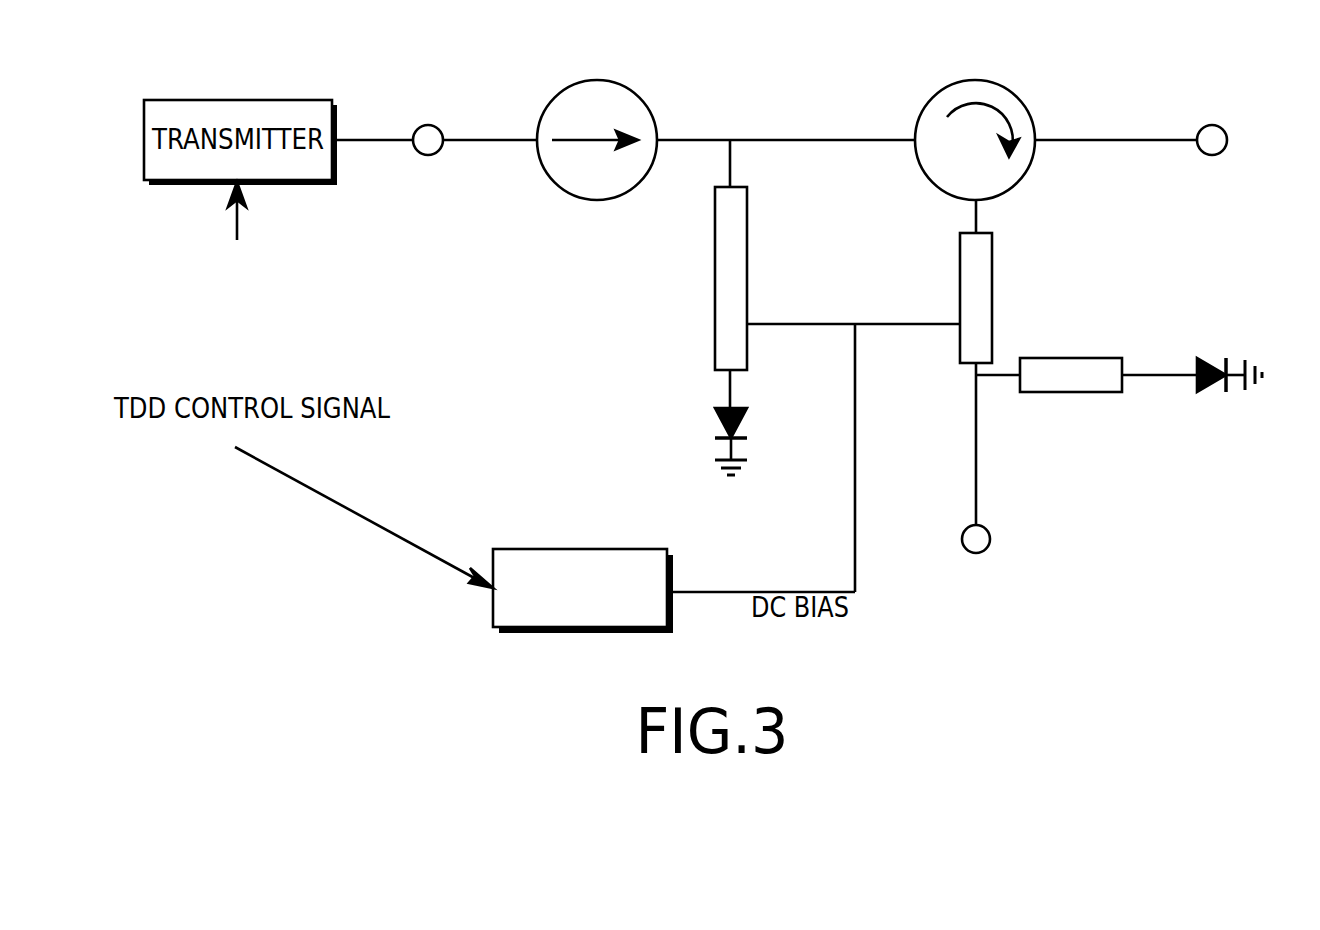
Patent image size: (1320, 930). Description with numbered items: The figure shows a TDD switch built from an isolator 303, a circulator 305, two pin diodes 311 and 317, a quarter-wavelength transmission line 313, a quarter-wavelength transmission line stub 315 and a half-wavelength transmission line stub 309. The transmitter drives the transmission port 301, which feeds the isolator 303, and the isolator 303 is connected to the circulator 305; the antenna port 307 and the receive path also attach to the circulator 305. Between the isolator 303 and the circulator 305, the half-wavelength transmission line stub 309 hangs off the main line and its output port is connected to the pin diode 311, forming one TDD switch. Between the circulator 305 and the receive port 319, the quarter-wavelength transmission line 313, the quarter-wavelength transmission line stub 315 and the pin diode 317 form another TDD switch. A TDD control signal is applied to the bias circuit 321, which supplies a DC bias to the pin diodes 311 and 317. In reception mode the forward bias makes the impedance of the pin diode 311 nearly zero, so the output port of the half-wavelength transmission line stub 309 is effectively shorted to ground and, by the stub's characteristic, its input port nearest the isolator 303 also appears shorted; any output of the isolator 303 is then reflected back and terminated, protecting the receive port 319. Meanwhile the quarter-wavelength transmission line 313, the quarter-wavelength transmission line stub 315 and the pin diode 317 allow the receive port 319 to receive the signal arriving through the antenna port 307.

The transmission port 301 is at (425, 177).
The isolator 303 is at (599, 100).
The circulator 305 is at (961, 100).
The antenna port 307 is at (1209, 179).
The λ/2 transmission line stub 309 is at (638, 255).
The pin diode 311 is at (647, 448).
The λ/4 transmission line 313 is at (853, 397).
The λ/4 transmission line stub 315 is at (1070, 358).
The pin diode 317 is at (1200, 414).
The receive port 319 is at (1033, 556).
The bias circuit 321 is at (674, 591).